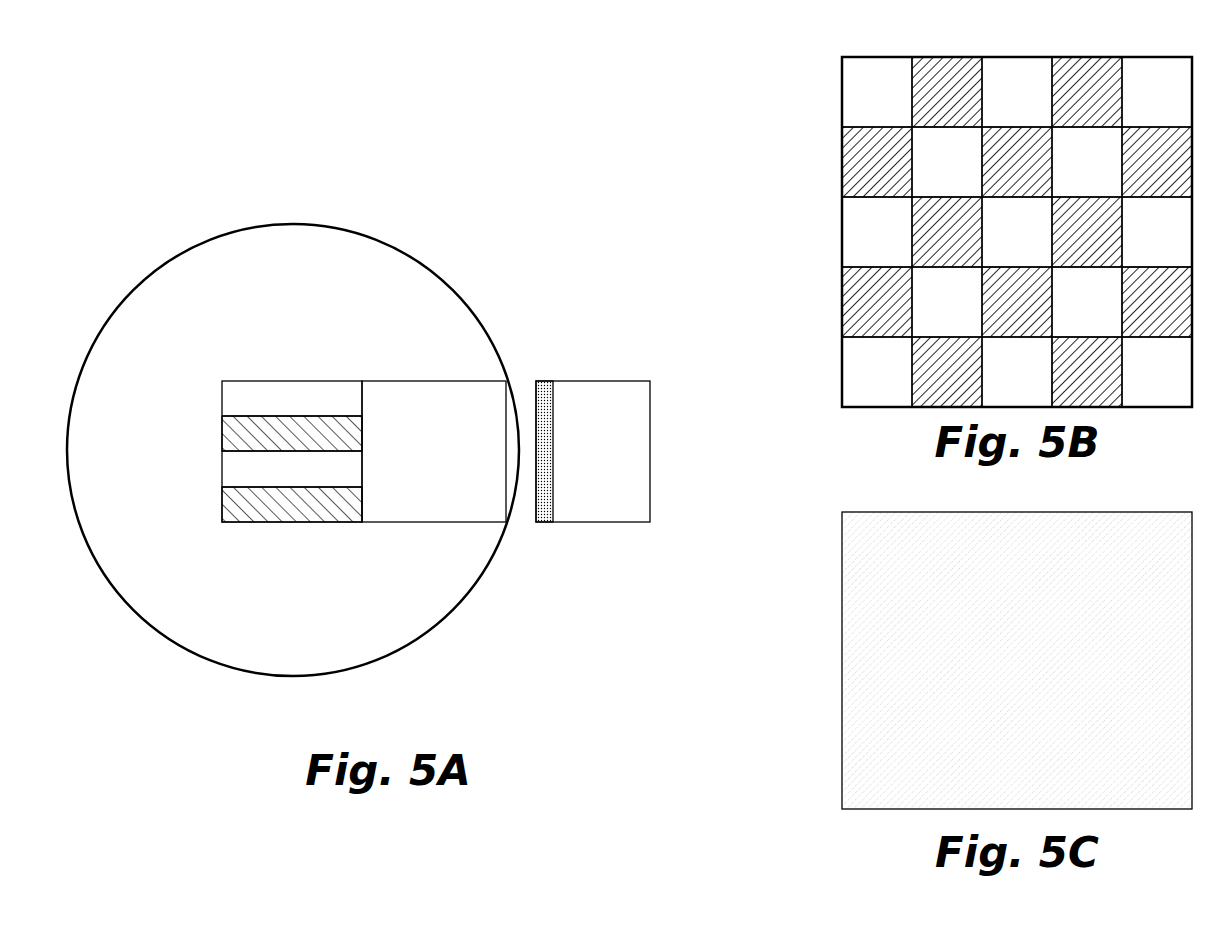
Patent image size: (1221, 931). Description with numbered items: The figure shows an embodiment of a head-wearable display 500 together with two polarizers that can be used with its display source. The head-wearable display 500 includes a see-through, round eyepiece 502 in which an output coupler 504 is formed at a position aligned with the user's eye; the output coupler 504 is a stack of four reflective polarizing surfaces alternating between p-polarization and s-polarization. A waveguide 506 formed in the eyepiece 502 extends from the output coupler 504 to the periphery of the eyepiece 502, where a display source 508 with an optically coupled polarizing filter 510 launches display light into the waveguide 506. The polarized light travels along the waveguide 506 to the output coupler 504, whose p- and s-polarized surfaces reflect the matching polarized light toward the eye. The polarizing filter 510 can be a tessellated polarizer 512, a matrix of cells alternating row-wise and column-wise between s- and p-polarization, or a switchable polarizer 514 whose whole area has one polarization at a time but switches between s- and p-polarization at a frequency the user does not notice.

In FIG. 5A, the head-wearable display 500 is at (213, 150).
In FIG. 5A, the eyepiece 502 is at (161, 614).
In FIG. 5A, the output coupler 504 is at (210, 377).
In FIG. 5A, the waveguide 506 is at (419, 451).
In FIG. 5A, the display source 508 is at (588, 470).
In FIG. 5A, the polarizing filter 510 is at (551, 502).
In FIG. 5B, the polarizer 512 is at (810, 73).
In FIG. 5C, the switchable polarizer 514 is at (818, 793).